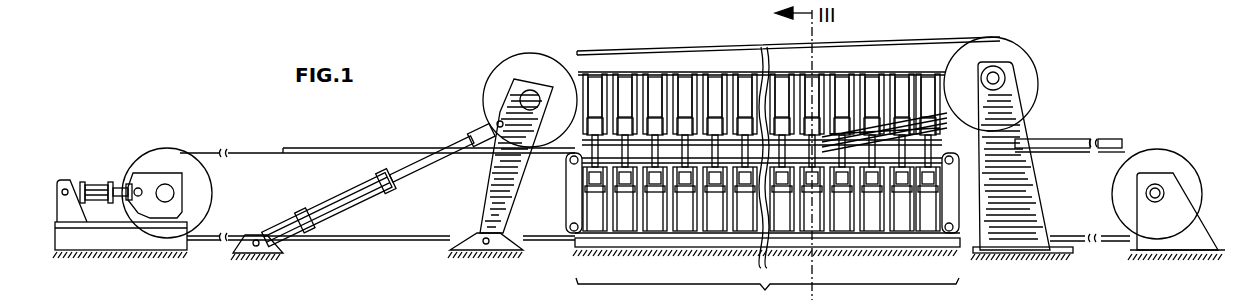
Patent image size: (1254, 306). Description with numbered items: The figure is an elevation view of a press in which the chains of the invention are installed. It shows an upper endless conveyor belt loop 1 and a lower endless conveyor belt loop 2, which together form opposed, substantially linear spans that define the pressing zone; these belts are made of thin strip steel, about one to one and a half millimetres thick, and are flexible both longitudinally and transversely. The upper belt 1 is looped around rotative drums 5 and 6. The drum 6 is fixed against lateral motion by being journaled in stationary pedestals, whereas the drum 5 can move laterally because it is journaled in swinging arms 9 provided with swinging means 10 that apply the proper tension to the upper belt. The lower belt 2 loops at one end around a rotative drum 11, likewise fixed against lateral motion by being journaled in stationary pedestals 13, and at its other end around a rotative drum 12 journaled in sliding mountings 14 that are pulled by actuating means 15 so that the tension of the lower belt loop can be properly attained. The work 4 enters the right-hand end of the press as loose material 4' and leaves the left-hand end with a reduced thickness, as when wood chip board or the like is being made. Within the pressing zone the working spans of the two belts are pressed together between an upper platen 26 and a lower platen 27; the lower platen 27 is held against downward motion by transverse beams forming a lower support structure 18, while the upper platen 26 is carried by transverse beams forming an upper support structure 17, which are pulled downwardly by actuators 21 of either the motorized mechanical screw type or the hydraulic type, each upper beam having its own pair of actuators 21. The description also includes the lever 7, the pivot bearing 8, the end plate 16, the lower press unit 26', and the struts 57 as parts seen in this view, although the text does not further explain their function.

The upper endless conveyor belt loop 1 is at (862, 43).
The lower endless conveyor belt loop 2 is at (1128, 152).
The work 4 is at (377, 167).
The loose material 4' is at (1070, 121).
The rotative drum 5 is at (528, 68).
The rotative drum 6 is at (1030, 72).
The support lever 7 is at (1017, 133).
The pivot bearing 8 is at (477, 240).
The swinging arms 9 is at (493, 167).
The swinging means 10 is at (372, 197).
The rotative drum 11 is at (1173, 163).
The rotative drum 12 is at (178, 160).
The stationary pedestals 13 is at (1173, 233).
The sliding mountings 14 is at (148, 182).
The actuating means 15 is at (97, 182).
The frame end plate 16 is at (940, 67).
The upper support structure 17 is at (710, 70).
The lower support structure 18 is at (638, 243).
The actuators 21 is at (698, 167).
The upper platen 26 is at (838, 93).
The lower press unit 26' is at (855, 228).
The lower platen 27 is at (735, 160).
The diagonal struts 57 is at (877, 72).